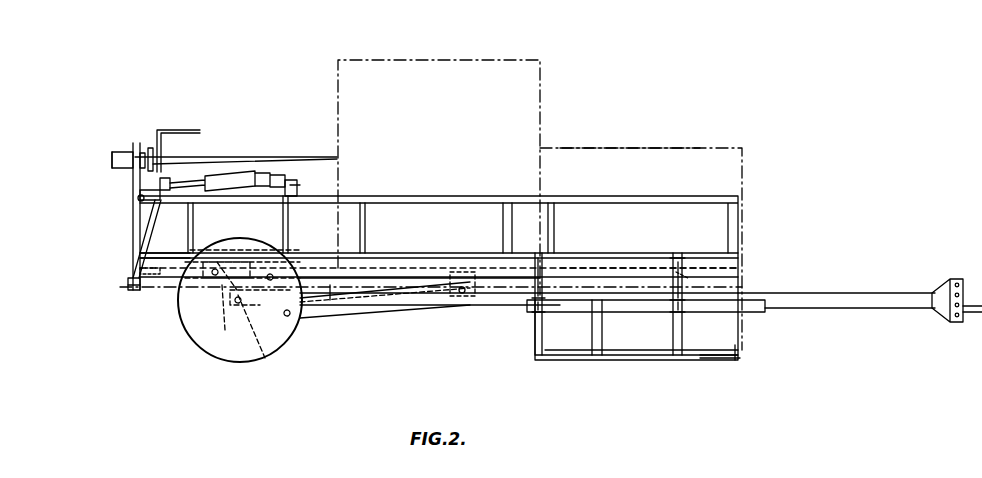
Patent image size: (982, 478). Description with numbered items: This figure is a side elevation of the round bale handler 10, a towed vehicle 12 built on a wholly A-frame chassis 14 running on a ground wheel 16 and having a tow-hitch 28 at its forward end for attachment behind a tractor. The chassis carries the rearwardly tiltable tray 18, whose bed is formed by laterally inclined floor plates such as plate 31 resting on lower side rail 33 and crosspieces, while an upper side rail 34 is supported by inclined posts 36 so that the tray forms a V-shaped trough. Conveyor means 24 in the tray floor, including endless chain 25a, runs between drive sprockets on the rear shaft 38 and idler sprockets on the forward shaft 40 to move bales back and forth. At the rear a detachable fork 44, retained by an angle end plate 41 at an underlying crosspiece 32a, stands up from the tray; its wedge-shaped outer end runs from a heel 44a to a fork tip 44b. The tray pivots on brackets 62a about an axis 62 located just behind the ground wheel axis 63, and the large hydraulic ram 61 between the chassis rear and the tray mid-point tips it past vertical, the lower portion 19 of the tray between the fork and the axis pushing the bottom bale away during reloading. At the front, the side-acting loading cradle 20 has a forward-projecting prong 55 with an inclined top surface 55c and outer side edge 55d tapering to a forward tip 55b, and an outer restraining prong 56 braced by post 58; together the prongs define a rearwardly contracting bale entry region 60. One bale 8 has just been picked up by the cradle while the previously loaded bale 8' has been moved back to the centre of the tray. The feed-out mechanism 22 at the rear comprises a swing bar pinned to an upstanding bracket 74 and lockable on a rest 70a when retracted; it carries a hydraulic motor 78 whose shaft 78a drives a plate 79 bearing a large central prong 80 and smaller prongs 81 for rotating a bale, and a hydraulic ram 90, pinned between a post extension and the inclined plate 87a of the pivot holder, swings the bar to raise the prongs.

The previously loaded bale 8' is at (439, 156).
The bale 8 is at (641, 236).
The handler 10 is at (604, 140).
The vehicle 12 is at (332, 336).
The A-frame chassis 14 is at (475, 302).
The ground wheel 16 is at (190, 330).
The tray 18 is at (742, 200).
The lower portion of the tray 19 is at (164, 264).
The bale loading cradle 20 is at (537, 354).
The feed-out mechanism 22 is at (110, 160).
The conveyor means 24 is at (592, 266).
The conveyor chain 25a is at (390, 306).
The tow-hitch 28 is at (942, 284).
The floor plate 31 is at (408, 254).
The crosspiece 32a is at (134, 290).
The lower side rail 33 is at (490, 282).
The upper side rail 34 is at (447, 196).
The post 36 is at (556, 205).
The shaft 38 is at (288, 254).
The shaft 40 is at (690, 282).
The angle end plate 41 is at (128, 280).
The fork 44 is at (140, 246).
The heel 44a is at (132, 236).
The fork tip 44b is at (133, 148).
The prong 55 is at (704, 358).
The forward tip 55b is at (742, 348).
The inclined top surface 55c is at (740, 362).
The outer side edge 55d is at (716, 362).
The prong 56 is at (762, 303).
The post 58 is at (596, 340).
The bale entry region 60 is at (752, 330).
The hydraulic ram 61 is at (345, 330).
The axis 62 is at (242, 284).
The bracket 62a is at (250, 305).
The ground wheel axis 63 is at (264, 358).
The rest 70a is at (292, 190).
The bracket 74 is at (165, 188).
The hydraulic motor 78 is at (138, 168).
The motor shaft 78a is at (146, 152).
The plate 79 is at (163, 150).
The central prong 80 is at (240, 158).
The smaller prong 81 is at (166, 130).
The inclined plate 87a is at (145, 200).
The hydraulic ram 90 is at (270, 162).